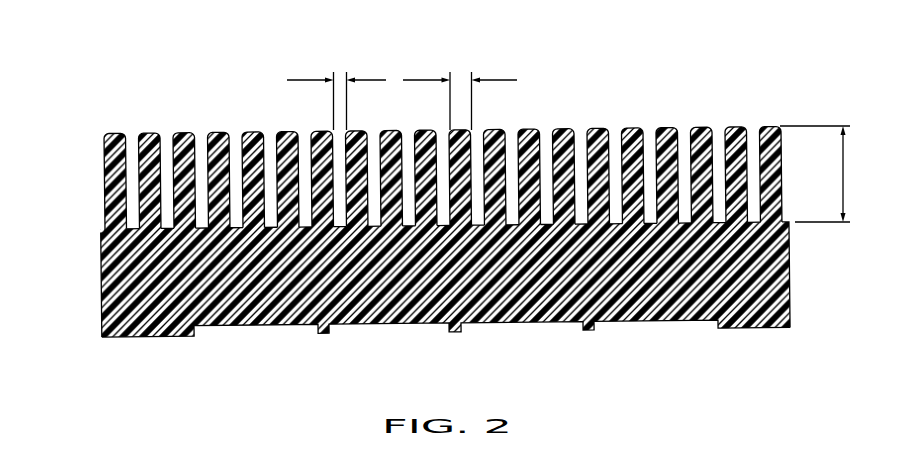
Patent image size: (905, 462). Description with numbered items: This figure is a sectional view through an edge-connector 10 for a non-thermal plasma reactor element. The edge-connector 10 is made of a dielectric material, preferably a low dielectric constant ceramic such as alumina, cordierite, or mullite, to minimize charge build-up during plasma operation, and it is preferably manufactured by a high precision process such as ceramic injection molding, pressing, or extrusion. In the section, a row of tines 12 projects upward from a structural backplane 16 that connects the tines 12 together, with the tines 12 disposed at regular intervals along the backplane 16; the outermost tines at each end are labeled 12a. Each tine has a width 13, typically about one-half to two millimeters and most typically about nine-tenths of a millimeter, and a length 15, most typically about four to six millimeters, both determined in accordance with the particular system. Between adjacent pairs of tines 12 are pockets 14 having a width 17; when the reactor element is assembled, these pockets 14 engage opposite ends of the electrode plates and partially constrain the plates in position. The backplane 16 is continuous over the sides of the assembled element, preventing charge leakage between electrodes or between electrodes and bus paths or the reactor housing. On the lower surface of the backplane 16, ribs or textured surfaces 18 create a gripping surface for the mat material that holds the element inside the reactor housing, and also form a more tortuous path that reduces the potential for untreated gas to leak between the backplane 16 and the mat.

The edge-connector 10 is at (165, 100).
The tines 12 is at (628, 130).
The end fin 12a is at (112, 137).
The tine width 13 is at (462, 75).
The pockets 14 is at (543, 147).
The tine length 15 is at (816, 174).
The structural backplane 16 is at (100, 298).
The pocket width 17 is at (342, 75).
The ribs or textured surfaces 18 is at (278, 323).